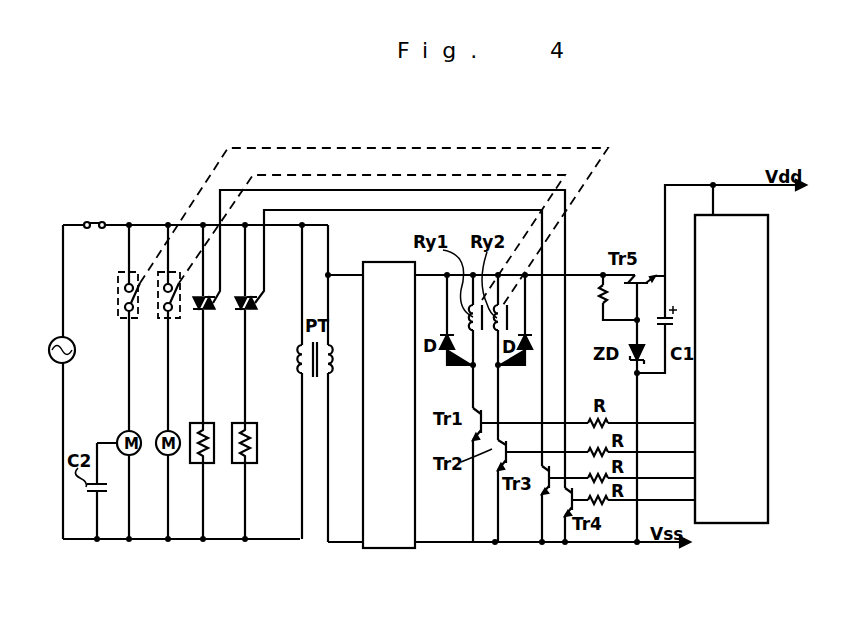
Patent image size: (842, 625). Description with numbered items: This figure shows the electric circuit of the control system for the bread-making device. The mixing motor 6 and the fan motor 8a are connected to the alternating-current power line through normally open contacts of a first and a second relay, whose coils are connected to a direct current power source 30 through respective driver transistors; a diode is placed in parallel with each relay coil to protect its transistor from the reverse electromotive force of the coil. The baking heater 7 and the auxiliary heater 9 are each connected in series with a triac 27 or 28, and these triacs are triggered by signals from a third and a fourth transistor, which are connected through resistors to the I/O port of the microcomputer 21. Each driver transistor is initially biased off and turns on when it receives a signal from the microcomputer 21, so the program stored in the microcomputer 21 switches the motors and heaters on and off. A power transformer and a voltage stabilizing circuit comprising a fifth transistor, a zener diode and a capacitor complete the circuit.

The mixing motor 6 is at (121, 435).
The fan motor 8a is at (162, 433).
The baking heater 7 is at (207, 430).
The auxiliary heater 9 is at (249, 430).
The triac 27 is at (208, 310).
The triac 28 is at (246, 310).
The direct current power source 30 is at (385, 549).
The microcomputer 21 is at (768, 497).